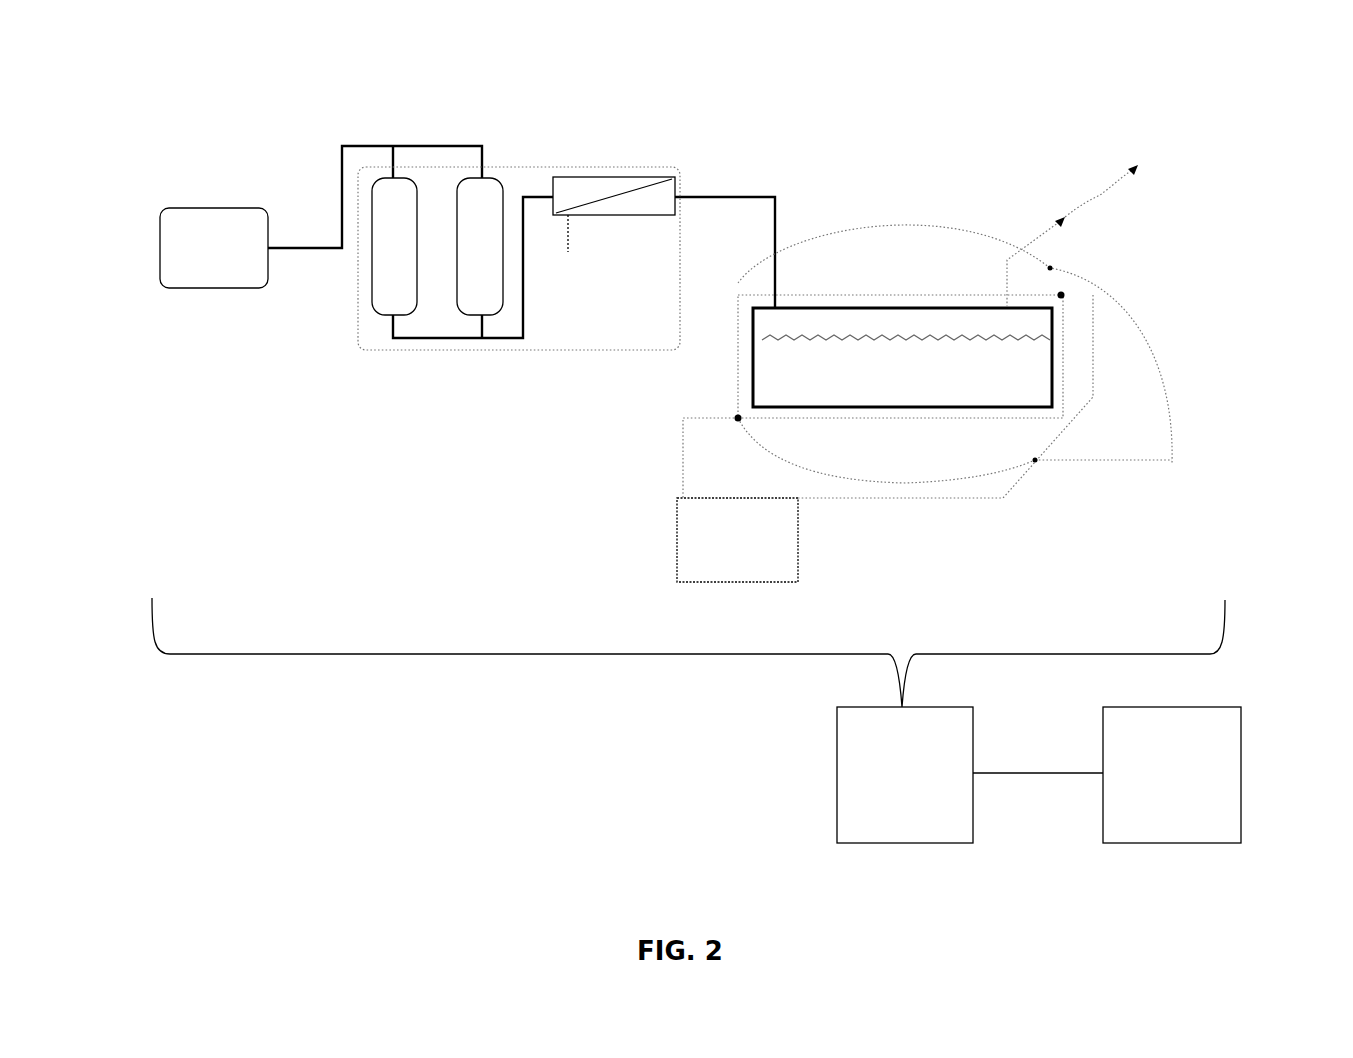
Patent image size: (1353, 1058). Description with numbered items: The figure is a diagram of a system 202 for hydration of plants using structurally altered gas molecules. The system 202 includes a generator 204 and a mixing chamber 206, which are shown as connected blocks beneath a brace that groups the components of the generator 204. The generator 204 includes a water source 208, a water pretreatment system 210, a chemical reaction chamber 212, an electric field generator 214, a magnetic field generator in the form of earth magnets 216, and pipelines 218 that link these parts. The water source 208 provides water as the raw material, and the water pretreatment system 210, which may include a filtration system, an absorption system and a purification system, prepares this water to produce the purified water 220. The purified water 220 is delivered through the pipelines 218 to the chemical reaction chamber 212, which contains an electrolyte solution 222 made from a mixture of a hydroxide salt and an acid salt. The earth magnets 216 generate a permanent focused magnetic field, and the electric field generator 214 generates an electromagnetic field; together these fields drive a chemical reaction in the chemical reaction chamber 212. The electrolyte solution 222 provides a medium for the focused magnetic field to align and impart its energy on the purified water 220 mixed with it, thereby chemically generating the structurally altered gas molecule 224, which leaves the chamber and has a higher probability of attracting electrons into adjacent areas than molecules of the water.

The system 202 is at (1242, 322).
The generator 204 is at (888, 804).
The mixing chamber 206 is at (1155, 821).
The water source 208 is at (212, 288).
The water pretreatment system 210 is at (518, 350).
The chemical reaction chamber 212 is at (907, 297).
The electric field generator 214 is at (677, 566).
The earth magnets 216 is at (1157, 580).
The pipelines 218 is at (861, 183).
The purified water 220 is at (790, 183).
The electrolyte solution 222 is at (996, 387).
The structurally altered gas molecule 224 is at (1215, 183).